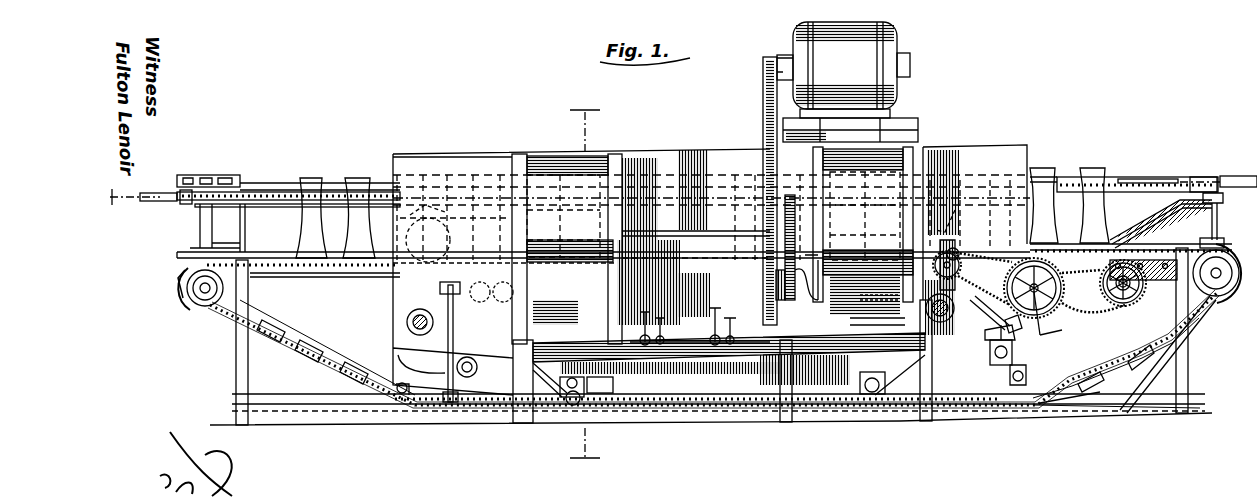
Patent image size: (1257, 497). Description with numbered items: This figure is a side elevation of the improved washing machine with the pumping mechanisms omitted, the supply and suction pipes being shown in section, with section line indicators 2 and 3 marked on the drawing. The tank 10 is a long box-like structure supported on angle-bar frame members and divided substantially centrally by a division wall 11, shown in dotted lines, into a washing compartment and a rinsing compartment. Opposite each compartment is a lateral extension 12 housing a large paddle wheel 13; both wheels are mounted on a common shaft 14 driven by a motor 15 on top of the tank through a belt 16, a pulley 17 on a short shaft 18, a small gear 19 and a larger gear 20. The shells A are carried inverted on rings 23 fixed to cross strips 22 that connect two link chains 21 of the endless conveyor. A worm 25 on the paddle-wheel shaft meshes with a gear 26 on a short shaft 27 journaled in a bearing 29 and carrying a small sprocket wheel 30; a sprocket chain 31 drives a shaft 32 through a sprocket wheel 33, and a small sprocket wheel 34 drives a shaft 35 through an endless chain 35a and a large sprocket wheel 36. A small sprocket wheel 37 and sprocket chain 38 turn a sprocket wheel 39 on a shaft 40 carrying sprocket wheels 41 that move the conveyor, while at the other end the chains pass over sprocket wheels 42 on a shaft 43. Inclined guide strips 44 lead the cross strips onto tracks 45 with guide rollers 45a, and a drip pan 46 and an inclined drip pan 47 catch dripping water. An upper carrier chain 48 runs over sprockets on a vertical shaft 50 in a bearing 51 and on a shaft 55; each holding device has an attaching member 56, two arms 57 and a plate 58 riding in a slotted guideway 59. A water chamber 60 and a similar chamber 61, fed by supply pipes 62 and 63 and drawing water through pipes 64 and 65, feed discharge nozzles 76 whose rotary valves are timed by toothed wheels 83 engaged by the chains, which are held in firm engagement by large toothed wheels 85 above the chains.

The section line 2 is at (674, 185).
The section line 3 is at (585, 285).
The shell A is at (326, 180).
The tank 10 is at (1020, 150).
The division wall 11 is at (660, 312).
The lateral extension 12 is at (608, 156).
The paddle wheel 13 is at (520, 154).
The common shaft 14 is at (722, 231).
The motor 15 is at (870, 52).
The belt 16 is at (763, 122).
The pulley 17 is at (776, 288).
The short shaft 18 is at (800, 348).
The small gear 19 is at (722, 255).
The larger gear 20 is at (790, 198).
The link chain 21 is at (282, 334).
The cross strip 22 is at (350, 258).
The ring 23 is at (345, 386).
The worm 25 is at (950, 240).
The gear 26 is at (1008, 283).
The short shaft 27 is at (960, 262).
The bearing 29 is at (960, 252).
The small sprocket wheel 30 is at (988, 338).
The sprocket chain 31 is at (1012, 332).
The shaft 32 is at (1040, 333).
The sprocket wheel 33 is at (992, 316).
The small sprocket wheel 34 is at (1058, 333).
The shaft 35 is at (1127, 302).
The endless chain 35a is at (1088, 306).
The large sprocket wheel 36 is at (1120, 305).
The small sprocket wheel 37 is at (1132, 290).
The sprocket chain 38 is at (1110, 278).
The sprocket wheel 39 is at (1205, 300).
The shaft 40 is at (1232, 297).
The sprocket wheel 41 is at (1208, 242).
The sprocket wheel 42 is at (186, 302).
The shaft 43 is at (205, 294).
The guide strip 44 is at (1062, 403).
The track 45 is at (955, 414).
The guide roller 45a is at (406, 388).
The drip pan 46 is at (748, 412).
The inclined drip pan 47 is at (1160, 390).
The chain 48 is at (195, 207).
The vertical shaft 50 is at (1230, 250).
The bearing 51 is at (1208, 205).
The shaft 55 is at (200, 231).
The base or attaching member 56 is at (216, 198).
The arm 57 is at (162, 195).
The plate 58 is at (180, 200).
The track or guideway 59 is at (1200, 180).
The water chamber 60 is at (453, 343).
The chamber 61 is at (862, 322).
The supply pipe 62 is at (406, 322).
The supply pipe 63 is at (940, 322).
The pipe 64 is at (470, 375).
The pipe 65 is at (998, 367).
The discharge nozzle 76 is at (880, 308).
The toothed wheel 83 is at (388, 280).
The large toothed wheel 85 is at (432, 218).